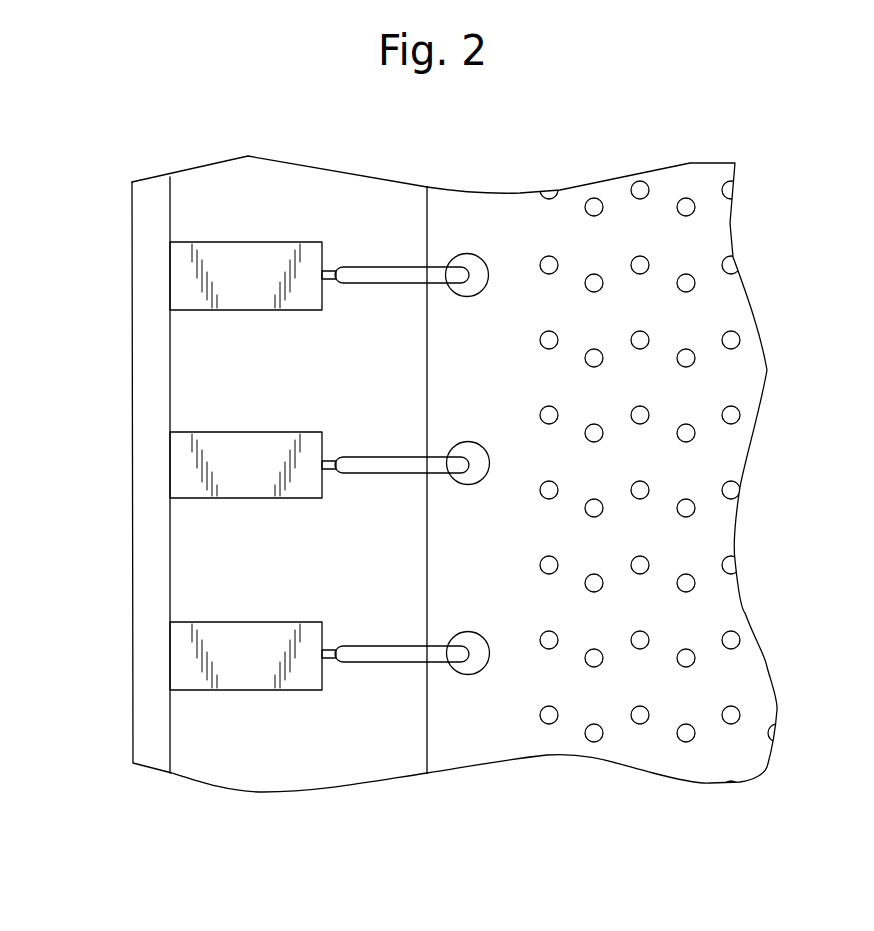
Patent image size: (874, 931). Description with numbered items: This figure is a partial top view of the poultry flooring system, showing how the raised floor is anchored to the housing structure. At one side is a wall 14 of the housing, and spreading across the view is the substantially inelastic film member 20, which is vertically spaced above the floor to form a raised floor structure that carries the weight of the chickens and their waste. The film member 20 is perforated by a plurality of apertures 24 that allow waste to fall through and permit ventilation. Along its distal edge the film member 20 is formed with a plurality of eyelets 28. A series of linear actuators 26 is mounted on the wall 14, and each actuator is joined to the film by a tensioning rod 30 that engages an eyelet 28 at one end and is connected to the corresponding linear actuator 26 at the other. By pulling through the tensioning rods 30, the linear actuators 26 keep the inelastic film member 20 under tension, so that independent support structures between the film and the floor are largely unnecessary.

The wall 14 is at (143, 635).
The inelastic film member 20 is at (747, 373).
The apertures 24 is at (693, 355).
The linear actuators 26 is at (258, 310).
The eyelets 28 is at (462, 256).
The tensioning rod 30 is at (390, 285).